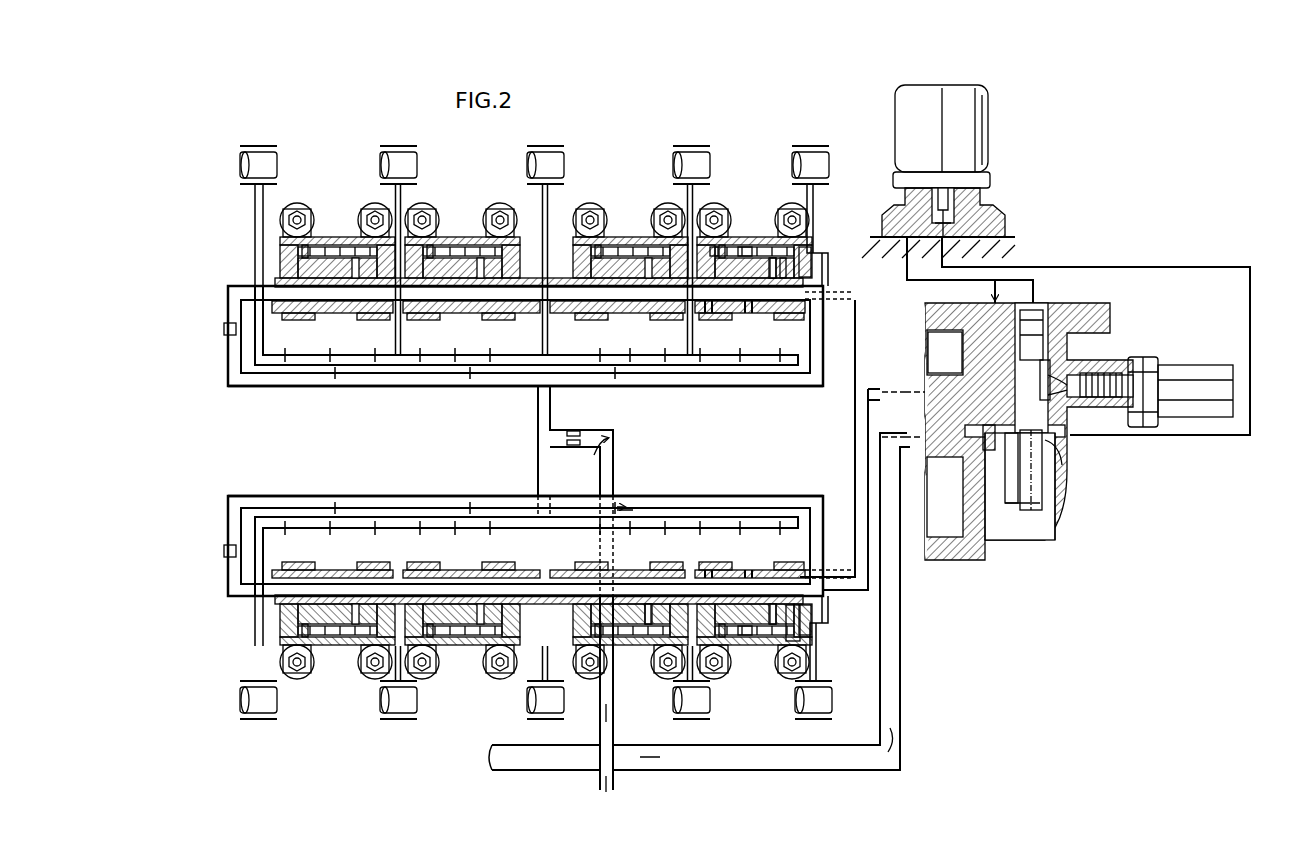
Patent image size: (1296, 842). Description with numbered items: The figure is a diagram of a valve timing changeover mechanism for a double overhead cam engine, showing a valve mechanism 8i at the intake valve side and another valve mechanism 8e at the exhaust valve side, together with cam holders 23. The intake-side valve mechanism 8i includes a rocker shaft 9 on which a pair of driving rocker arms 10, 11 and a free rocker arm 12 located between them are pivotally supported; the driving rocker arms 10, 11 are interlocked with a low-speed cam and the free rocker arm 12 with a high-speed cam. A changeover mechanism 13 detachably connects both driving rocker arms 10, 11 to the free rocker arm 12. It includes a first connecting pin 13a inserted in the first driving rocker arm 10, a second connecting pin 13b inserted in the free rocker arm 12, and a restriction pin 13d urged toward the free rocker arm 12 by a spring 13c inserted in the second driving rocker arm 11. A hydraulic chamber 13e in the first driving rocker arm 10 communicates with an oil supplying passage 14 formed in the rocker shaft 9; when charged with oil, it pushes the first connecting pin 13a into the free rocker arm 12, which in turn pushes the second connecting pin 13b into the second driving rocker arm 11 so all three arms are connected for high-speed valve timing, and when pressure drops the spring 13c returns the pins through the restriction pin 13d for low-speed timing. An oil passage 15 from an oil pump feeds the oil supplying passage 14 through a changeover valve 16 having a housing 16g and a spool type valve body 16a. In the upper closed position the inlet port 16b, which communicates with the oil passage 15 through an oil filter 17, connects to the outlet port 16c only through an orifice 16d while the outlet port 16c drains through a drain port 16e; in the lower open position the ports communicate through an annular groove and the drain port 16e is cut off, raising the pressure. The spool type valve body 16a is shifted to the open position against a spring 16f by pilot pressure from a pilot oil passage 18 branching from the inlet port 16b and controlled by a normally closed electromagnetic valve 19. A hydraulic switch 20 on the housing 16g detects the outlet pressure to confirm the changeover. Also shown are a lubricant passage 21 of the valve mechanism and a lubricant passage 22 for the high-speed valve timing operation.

The exhaust-side valve mechanism 8e is at (243, 262).
The intake-side valve mechanism 8i is at (240, 626).
The rocker shaft 9 is at (521, 278).
The first driving rocker arm 10 is at (795, 321).
The second driving rocker arm 11 is at (712, 310).
The free rocker arm 12 is at (748, 310).
The changeover mechanism 13 is at (333, 237).
The first connecting pin 13a is at (800, 242).
The second connecting pin 13b is at (743, 247).
The spring 13c is at (715, 247).
The restriction pin 13d is at (716, 278).
The hydraulic chamber 13e is at (790, 268).
The oil supplying passage 14 is at (610, 306).
The oil passage 15 is at (904, 620).
The changeover valve 16 is at (1068, 500).
The spool type valve body 16a is at (1050, 375).
The inlet port 16b is at (1060, 452).
The outlet port 16c is at (1020, 360).
The orifice 16d is at (1003, 432).
The drain port 16e is at (950, 343).
The spring 16f is at (1043, 500).
The housing 16g is at (1122, 360).
The oil filter 17 is at (1010, 478).
The pilot oil passage 18 is at (1251, 436).
The electromagnetic valve 19 is at (995, 142).
The hydraulic switch 20 is at (1190, 365).
The lubricant passage 21 is at (675, 374).
The lubricant passage for high-speed valve timing operation 22 is at (497, 388).
The cam holder 23 is at (812, 150).